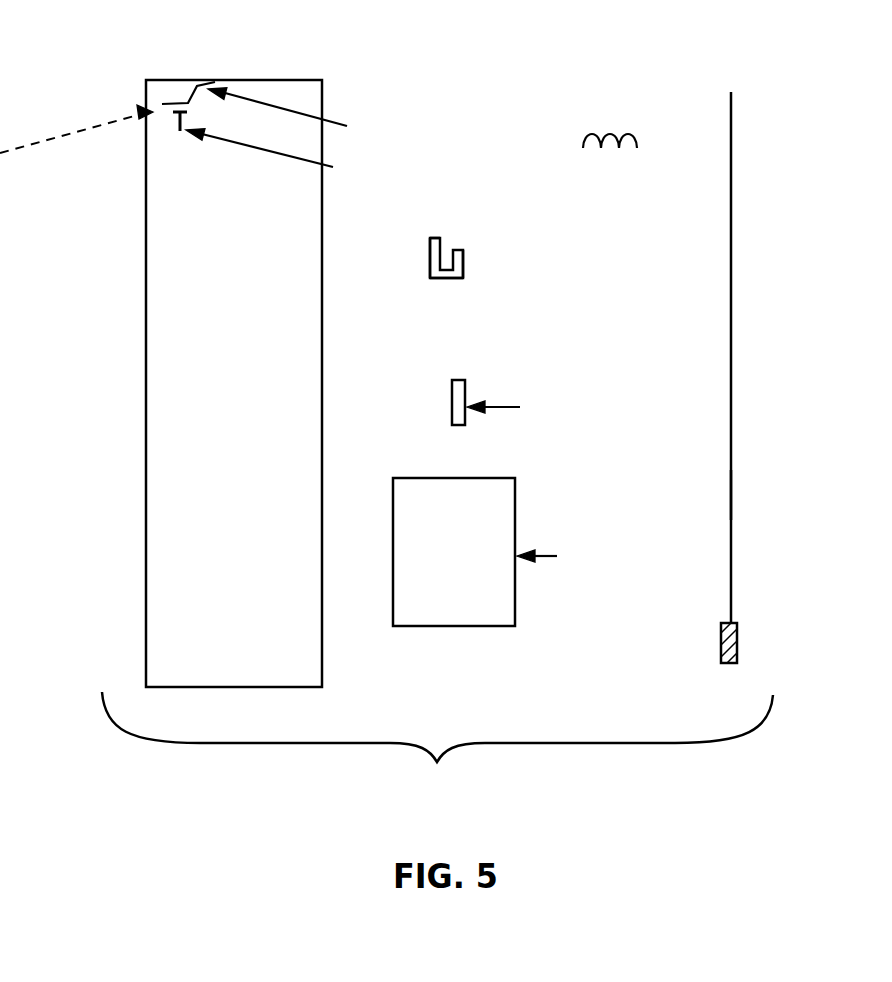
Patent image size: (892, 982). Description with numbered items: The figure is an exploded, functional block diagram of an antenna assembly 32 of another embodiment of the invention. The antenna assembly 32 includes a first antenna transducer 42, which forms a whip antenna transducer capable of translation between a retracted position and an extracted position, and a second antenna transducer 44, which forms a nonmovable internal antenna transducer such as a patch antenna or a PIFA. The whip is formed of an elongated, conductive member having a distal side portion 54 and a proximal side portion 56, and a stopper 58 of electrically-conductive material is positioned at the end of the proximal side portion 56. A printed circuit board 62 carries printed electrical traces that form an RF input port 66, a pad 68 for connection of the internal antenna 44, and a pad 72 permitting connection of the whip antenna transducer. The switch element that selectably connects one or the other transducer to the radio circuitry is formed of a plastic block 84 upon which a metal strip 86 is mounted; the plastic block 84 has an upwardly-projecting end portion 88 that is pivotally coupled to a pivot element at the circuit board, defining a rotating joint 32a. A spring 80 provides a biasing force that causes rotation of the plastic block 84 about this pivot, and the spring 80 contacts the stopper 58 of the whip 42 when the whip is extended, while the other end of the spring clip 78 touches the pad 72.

The antenna assembly 32 is at (525, 29).
The rotating joint plastic block 32a is at (449, 255).
The first antenna transducer 42 is at (714, 354).
The second antenna transducer 44 is at (518, 500).
The distal side portion 54 is at (733, 118).
The proximal side portion 56 is at (732, 515).
The stopper 58 is at (738, 633).
The printed circuit board 62 is at (324, 395).
The RF input port 66 is at (197, 106).
The pad 68 is at (212, 84).
The pad 72 is at (161, 104).
The spring clip 78 is at (468, 393).
The spring 80 is at (637, 130).
The plastic block 84 is at (440, 271).
The metal strip 86 is at (463, 266).
The upwardly-projecting end portion 88 is at (431, 238).